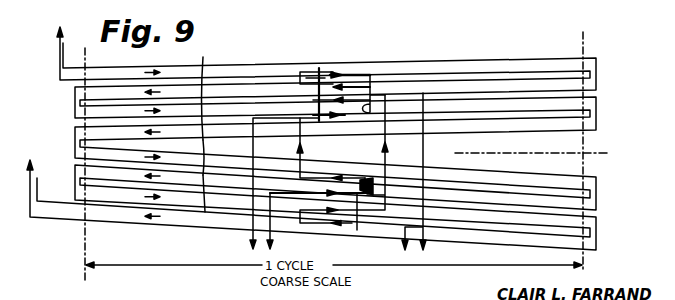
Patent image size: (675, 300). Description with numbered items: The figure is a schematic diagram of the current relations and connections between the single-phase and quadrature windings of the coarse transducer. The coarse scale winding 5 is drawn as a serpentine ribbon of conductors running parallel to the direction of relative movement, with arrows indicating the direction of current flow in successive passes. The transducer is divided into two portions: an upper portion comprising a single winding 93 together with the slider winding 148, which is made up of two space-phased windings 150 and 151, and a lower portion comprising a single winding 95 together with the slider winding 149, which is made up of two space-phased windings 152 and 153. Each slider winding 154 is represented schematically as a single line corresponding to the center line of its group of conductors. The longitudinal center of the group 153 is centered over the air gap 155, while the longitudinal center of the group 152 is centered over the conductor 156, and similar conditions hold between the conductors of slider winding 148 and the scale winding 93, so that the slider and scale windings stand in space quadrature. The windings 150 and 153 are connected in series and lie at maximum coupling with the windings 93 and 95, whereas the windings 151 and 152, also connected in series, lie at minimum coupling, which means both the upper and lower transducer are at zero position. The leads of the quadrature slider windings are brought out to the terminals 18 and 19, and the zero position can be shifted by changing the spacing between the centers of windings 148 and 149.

The coarse scale winding 5 is at (500, 59).
The single winding of upper transducer portion 93 is at (205, 63).
The single winding of lower transducer portion 95 is at (205, 158).
The air gap 155 is at (214, 213).
The space-phased winding 150 is at (300, 70).
The slider winding 148 is at (319, 67).
The slider winding 154 is at (348, 75).
The space-phased winding 151 is at (372, 108).
The space-phased winding 152 is at (311, 192).
The slider winding 149 is at (373, 181).
The space-phased winding 153 is at (311, 205).
The conductor 156 is at (465, 195).
The terminal 18 is at (284, 190).
The terminal 19 is at (414, 180).